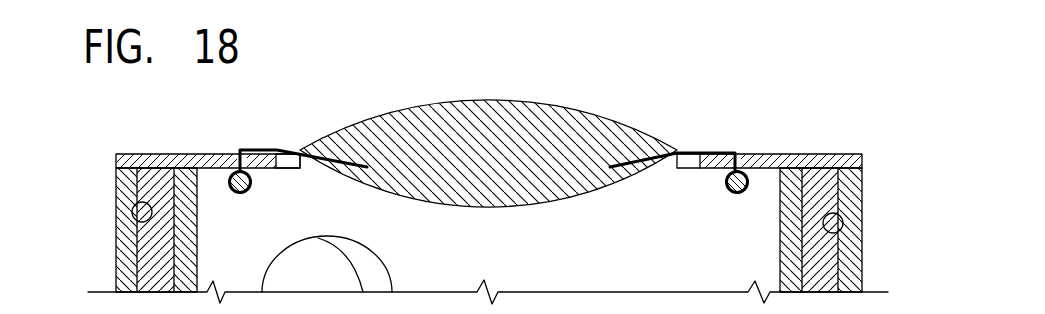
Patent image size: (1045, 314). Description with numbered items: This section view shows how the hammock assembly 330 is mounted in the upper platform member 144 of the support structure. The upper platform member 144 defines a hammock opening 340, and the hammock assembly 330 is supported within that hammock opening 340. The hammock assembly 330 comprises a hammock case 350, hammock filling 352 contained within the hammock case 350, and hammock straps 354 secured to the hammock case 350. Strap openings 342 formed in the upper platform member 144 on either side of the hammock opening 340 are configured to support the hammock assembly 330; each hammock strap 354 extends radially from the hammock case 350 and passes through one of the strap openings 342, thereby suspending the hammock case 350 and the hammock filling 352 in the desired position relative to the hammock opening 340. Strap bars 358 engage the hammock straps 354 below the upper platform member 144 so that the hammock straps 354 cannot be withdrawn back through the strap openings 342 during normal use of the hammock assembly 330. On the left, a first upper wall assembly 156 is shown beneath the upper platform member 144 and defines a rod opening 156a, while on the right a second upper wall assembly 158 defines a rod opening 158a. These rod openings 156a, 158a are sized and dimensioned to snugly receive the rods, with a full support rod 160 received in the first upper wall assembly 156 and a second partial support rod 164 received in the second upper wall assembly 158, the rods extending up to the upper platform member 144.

The upper platform member 144 is at (146, 154).
The first upper wall assembly 156 is at (115, 190).
The rod opening 156a is at (140, 208).
The full support rod 160 is at (150, 250).
The second upper wall assembly 158 is at (866, 196).
The rod opening 158a is at (842, 217).
The second partial support rod 164 is at (828, 264).
The hammock assembly 330 is at (488, 130).
The hammock case 350 is at (488, 130).
The hammock filling 352 is at (552, 122).
The hammock opening 340 is at (292, 158).
The strap opening 342 is at (490, 129).
The hammock strap 354 is at (287, 148).
The strap bar 358 is at (240, 194).